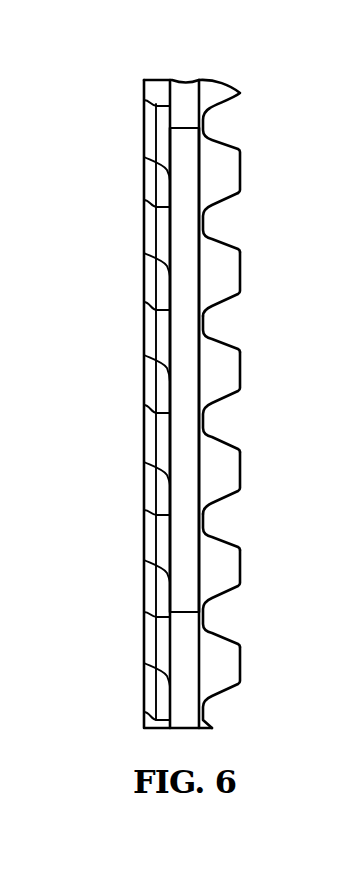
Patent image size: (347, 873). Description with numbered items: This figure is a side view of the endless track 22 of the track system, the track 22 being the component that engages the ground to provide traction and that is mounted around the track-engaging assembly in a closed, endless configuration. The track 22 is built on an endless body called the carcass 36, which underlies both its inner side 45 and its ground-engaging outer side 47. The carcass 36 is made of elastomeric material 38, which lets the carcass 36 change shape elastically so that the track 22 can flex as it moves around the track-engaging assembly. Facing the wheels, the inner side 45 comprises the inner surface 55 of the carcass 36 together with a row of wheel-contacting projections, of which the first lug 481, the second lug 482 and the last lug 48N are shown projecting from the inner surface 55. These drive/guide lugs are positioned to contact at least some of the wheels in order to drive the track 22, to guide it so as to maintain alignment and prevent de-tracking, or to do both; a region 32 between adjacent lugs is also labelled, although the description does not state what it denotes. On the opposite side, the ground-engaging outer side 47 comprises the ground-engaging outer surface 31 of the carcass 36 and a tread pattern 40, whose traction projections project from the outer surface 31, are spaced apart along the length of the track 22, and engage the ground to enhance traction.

The track 22 is at (205, 382).
The inner surface 55 is at (206, 129).
The carcass 36 is at (188, 180).
The elastomeric material 38 is at (186, 470).
The wheel-contacting projection 48N is at (228, 277).
The inner side 45 is at (218, 322).
The groove 32 is at (205, 517).
The wheel-contacting projection 482 is at (228, 571).
The wheel-contacting projection 481 is at (228, 668).
The ground-engaging outer side 47 is at (152, 283).
The ground-engaging outer surface 31 is at (172, 399).
The tread pattern 40 is at (168, 484).